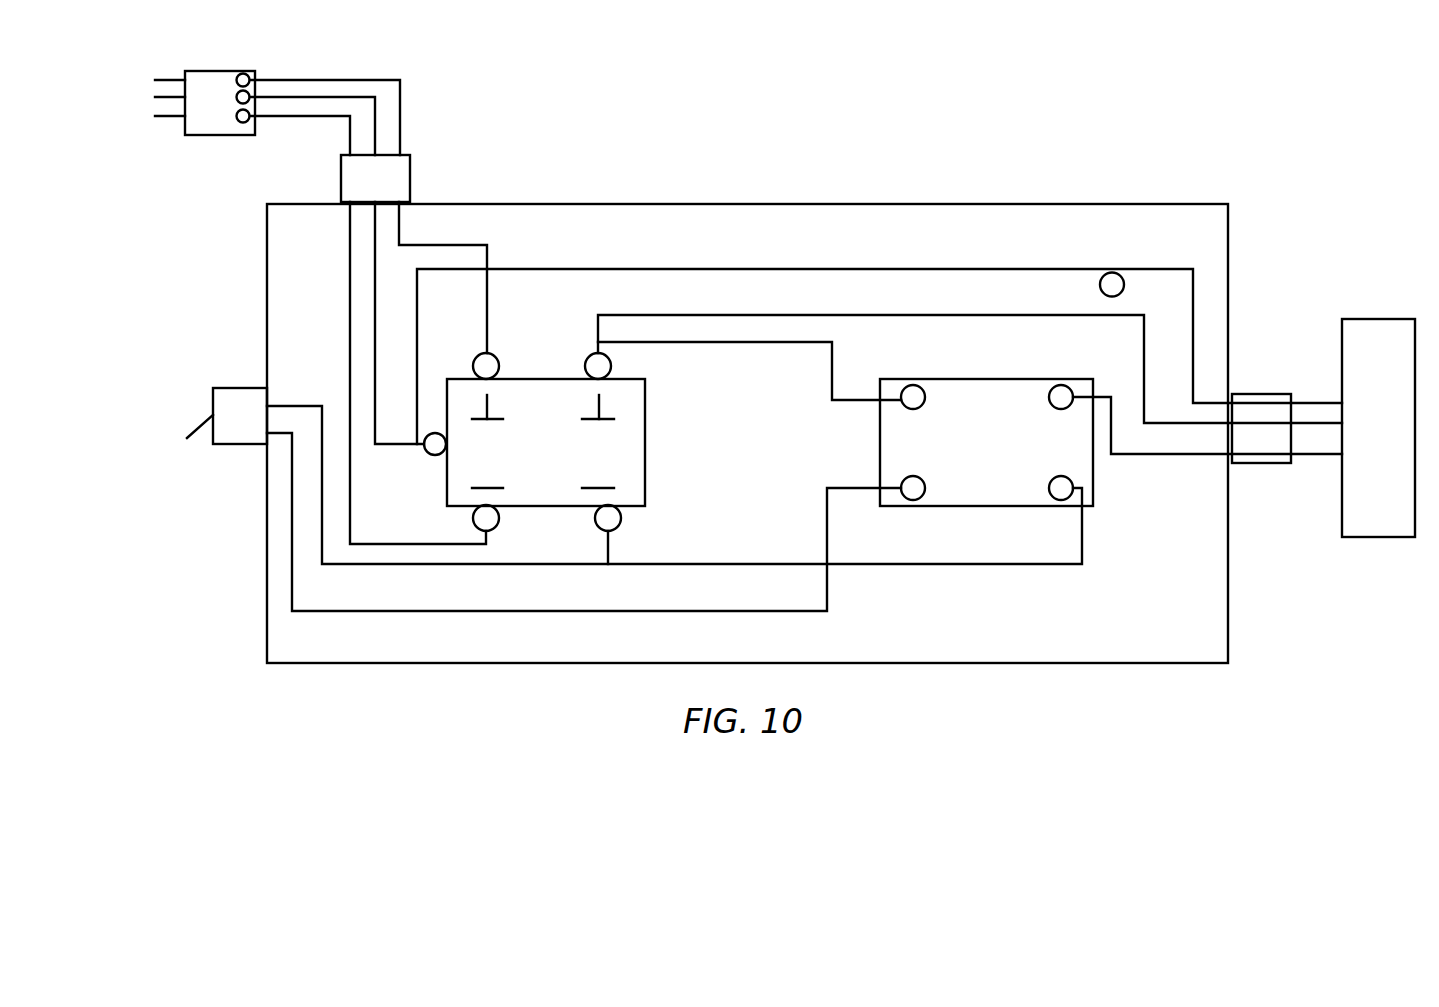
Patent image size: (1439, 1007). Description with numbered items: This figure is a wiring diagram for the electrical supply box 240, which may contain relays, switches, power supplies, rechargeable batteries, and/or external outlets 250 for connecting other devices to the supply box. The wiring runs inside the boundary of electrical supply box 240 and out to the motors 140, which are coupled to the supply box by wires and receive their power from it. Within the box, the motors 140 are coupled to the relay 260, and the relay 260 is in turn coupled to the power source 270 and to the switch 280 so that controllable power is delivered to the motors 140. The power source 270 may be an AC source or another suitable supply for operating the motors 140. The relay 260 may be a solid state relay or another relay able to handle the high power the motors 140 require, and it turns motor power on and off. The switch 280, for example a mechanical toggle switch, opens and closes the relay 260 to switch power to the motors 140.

The motors 140 is at (1363, 440).
The electrical supply box 240 is at (1180, 236).
The external outlets 250 is at (530, 457).
The relay 260 is at (1003, 452).
The power source 270 is at (193, 114).
The switch 280 is at (258, 429).